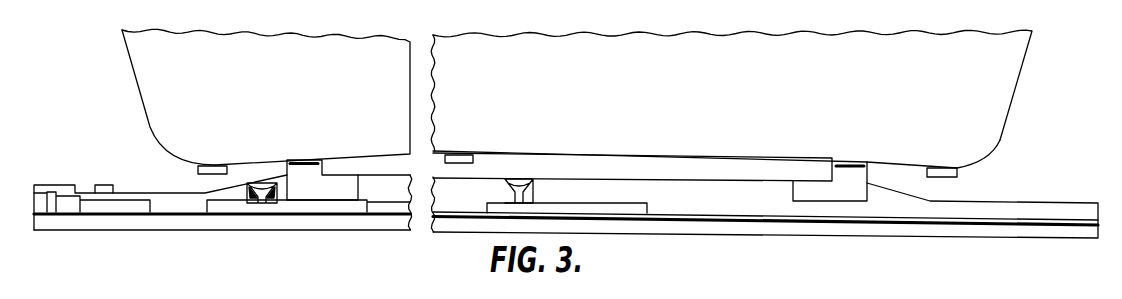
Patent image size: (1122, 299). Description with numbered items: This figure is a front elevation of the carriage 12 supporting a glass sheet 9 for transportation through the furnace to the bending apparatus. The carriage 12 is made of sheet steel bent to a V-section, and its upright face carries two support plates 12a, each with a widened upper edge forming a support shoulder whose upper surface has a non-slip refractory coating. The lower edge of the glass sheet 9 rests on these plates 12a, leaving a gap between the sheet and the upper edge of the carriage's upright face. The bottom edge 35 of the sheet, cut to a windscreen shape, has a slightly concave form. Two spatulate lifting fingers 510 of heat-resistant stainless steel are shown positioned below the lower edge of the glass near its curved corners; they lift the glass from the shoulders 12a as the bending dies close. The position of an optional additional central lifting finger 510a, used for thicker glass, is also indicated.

The glass sheet 9 is at (978, 126).
The carriage 12 is at (1063, 207).
The support plates 12a is at (332, 187).
The bottom edge 35 is at (767, 153).
The lifting fingers 510 is at (213, 165).
The additional lifting finger 510a is at (463, 154).